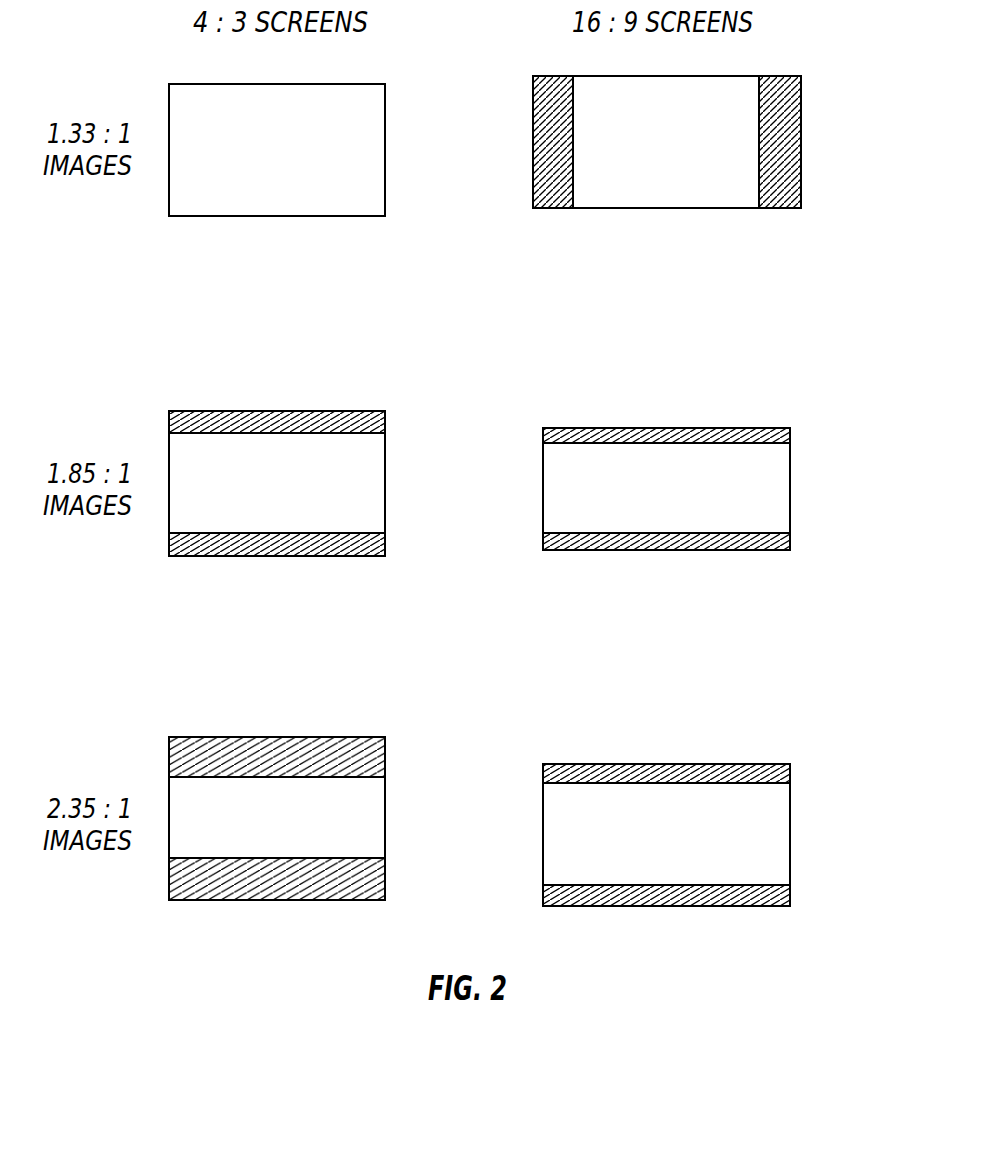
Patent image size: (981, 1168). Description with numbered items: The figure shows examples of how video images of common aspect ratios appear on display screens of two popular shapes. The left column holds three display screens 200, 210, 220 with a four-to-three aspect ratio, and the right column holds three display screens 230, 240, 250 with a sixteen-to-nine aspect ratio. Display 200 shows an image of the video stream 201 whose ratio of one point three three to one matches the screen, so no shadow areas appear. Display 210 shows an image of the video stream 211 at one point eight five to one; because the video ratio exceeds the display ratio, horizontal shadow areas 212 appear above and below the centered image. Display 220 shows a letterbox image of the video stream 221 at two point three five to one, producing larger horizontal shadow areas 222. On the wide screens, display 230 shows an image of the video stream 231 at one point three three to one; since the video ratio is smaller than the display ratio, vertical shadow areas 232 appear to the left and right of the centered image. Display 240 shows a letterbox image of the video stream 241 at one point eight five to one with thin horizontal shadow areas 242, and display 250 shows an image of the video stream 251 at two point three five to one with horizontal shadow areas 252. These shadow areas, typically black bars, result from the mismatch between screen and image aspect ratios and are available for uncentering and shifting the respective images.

The display screen 200 is at (385, 140).
The image of the video stream 201 is at (350, 152).
The display screen 230 is at (745, 76).
The image of the video stream 231 is at (732, 192).
The vertical shadow areas 232 is at (533, 133).
The display screen 210 is at (385, 498).
The image of the video stream 211 is at (368, 463).
The horizontal shadow areas 212 is at (385, 425).
The display screen 240 is at (790, 511).
The letterbox image of the video stream 241 is at (768, 465).
The horizontal shadow areas 242 is at (790, 437).
The display screen 220 is at (385, 835).
The letterbox image of the video stream 221 is at (368, 798).
The horizontal shadow areas 222 is at (385, 765).
The display screen 250 is at (790, 862).
The image of the video stream 251 is at (765, 816).
The horizontal shadow areas 252 is at (790, 774).